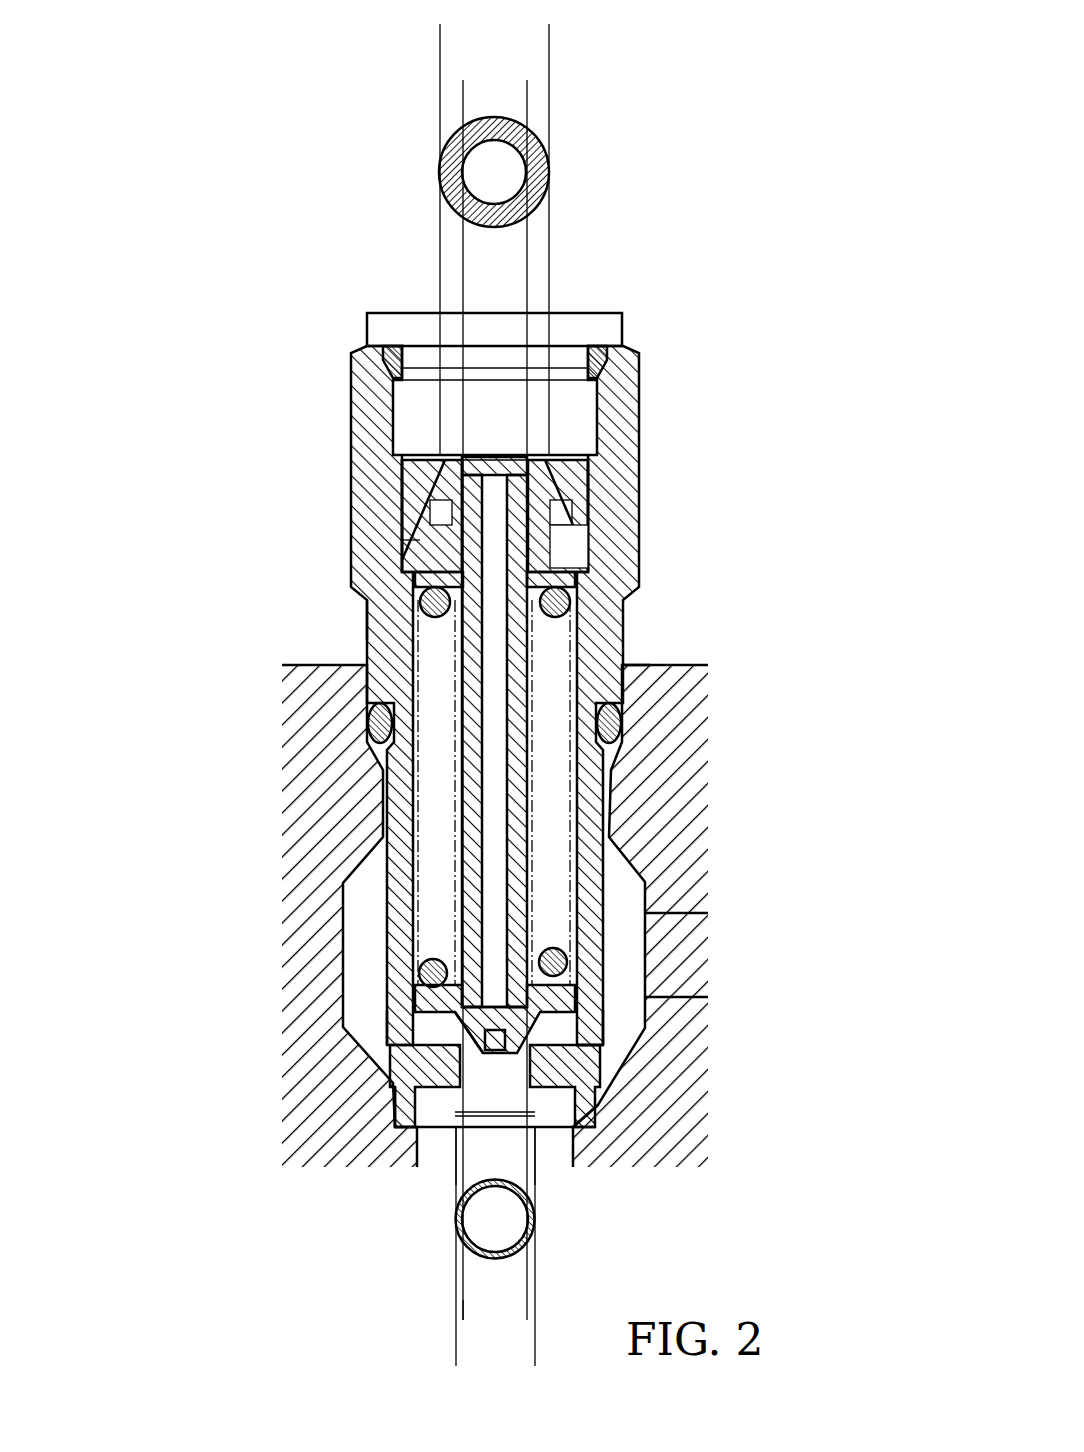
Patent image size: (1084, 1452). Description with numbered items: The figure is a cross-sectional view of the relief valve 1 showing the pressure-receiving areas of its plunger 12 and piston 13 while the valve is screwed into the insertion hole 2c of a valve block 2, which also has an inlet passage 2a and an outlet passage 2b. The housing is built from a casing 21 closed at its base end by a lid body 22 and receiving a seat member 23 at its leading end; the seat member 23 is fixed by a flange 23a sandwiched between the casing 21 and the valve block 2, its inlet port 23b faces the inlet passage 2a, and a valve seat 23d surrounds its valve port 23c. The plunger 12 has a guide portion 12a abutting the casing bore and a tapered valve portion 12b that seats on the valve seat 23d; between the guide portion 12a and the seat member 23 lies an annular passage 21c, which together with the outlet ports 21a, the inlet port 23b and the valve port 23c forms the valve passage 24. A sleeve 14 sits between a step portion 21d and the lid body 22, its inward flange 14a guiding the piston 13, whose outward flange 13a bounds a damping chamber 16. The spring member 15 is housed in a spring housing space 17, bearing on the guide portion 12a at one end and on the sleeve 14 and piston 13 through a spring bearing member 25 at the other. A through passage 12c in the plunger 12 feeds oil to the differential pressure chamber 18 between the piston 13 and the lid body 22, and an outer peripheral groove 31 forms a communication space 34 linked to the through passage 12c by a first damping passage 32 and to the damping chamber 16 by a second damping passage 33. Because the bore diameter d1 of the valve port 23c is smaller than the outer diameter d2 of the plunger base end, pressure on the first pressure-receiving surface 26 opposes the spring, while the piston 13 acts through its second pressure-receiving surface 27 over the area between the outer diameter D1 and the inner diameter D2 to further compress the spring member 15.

The relief valve 1 is at (516, 732).
The valve block 2 is at (493, 906).
The inlet passage 2a is at (565, 1150).
The outlet passage 2b is at (697, 913).
The insertion hole 2c is at (614, 690).
The plunger 12 is at (430, 797).
The guide portion 12a is at (410, 1023).
The valve portion 12b is at (457, 1037).
The through passage 12c is at (503, 857).
The piston 13 is at (408, 488).
The outward flange 13a is at (417, 502).
The sleeve 14 is at (366, 504).
The inward flange 14a is at (417, 540).
The spring member 15 is at (423, 623).
The damping chamber 16 is at (590, 527).
The spring housing space 17 is at (427, 695).
The differential pressure chamber 18 is at (497, 460).
The casing 21 is at (507, 730).
The outlet ports 21a is at (385, 1003).
The annular passage 21c is at (590, 1087).
The step portion 21d is at (394, 565).
The lid body 22 is at (403, 325).
The seat member 23 is at (501, 1069).
The flange 23a is at (412, 1100).
The inlet port 23b is at (445, 1140).
The valve port 23c is at (560, 1010).
The valve seat 23d is at (433, 970).
The valve passage 24 is at (523, 1080).
The spring bearing member 25 is at (415, 580).
The first pressure-receiving surface 26 is at (478, 1050).
The second pressure-receiving surface 27 is at (448, 460).
The outer peripheral groove 31 is at (530, 540).
The first damping passage 32 is at (523, 597).
The second damping passage 33 is at (535, 468).
The communication space 34 is at (588, 487).
The outer diameter D1 is at (549, 32).
The inner diameter D2 is at (527, 87).
The bore diameter d1 is at (535, 1359).
The outer diameter d2 is at (527, 1312).